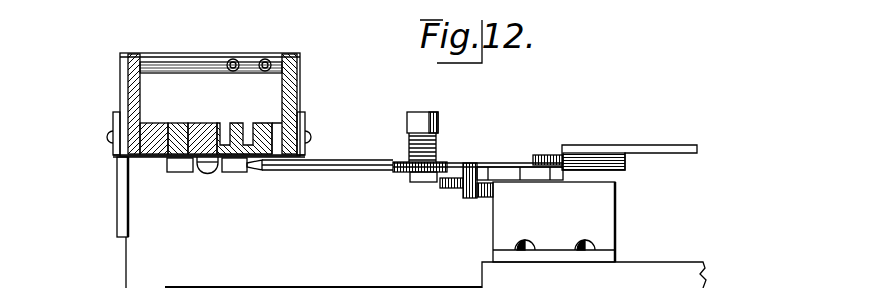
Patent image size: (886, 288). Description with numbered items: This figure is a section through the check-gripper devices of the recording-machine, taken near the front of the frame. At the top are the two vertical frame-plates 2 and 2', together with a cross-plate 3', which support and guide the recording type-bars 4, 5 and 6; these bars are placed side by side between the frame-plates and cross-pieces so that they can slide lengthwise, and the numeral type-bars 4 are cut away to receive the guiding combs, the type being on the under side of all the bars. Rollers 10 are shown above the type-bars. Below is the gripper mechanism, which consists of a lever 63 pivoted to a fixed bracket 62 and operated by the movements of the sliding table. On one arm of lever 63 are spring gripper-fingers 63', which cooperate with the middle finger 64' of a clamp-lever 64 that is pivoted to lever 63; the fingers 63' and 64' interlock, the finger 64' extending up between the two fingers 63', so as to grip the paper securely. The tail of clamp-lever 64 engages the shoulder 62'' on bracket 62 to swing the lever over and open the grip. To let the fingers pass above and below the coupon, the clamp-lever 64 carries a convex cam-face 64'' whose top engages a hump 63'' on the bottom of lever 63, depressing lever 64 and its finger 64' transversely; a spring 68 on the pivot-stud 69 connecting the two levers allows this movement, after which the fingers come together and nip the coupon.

The frame-plate 2 is at (199, 105).
The frame-plate 2' is at (301, 104).
The rollers 10 is at (263, 58).
The recording type-bar 5 is at (166, 122).
The recording type-bar 6 is at (204, 122).
The numeral type-bar 4 is at (250, 122).
The cross-plate 3' is at (137, 222).
The spring gripper-fingers 63' is at (174, 185).
The gripper-finger 64' is at (205, 182).
The cam-face 64'' is at (255, 185).
The cam or hump 63'' is at (296, 178).
The lever 63 is at (412, 154).
The clamp-lever 64 is at (330, 183).
The pivot-stud 69 is at (408, 122).
The spring 68 is at (438, 153).
The shoulder 62'' is at (562, 185).
The fixed bracket 62 is at (435, 235).